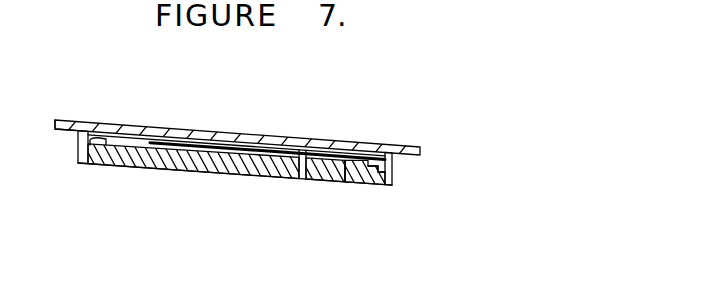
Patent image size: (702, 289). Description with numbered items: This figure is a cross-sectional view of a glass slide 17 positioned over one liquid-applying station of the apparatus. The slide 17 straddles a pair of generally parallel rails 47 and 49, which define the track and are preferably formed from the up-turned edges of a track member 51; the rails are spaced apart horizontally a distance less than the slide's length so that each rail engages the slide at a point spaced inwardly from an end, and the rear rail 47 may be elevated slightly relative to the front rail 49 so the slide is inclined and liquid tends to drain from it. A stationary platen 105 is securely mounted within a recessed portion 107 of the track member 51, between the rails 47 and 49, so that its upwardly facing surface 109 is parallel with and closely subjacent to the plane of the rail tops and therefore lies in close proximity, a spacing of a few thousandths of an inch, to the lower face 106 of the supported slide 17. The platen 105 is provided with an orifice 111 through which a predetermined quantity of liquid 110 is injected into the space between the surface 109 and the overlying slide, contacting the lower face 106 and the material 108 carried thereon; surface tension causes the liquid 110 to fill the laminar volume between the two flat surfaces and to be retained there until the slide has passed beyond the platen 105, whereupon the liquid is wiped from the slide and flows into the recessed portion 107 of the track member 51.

The slide 17 is at (400, 148).
The rear rail 47 is at (80, 134).
The front rail 49 is at (390, 158).
The track member 51 is at (391, 186).
The stationary platen 105 is at (341, 182).
The lower face of slide 106 is at (55, 137).
The recessed portion of track member 107 is at (375, 185).
The material carried by slide 108 is at (122, 133).
The upwardly facing surface of platen 109 is at (80, 166).
The liquid 110 is at (183, 171).
The orifice 111 is at (300, 180).